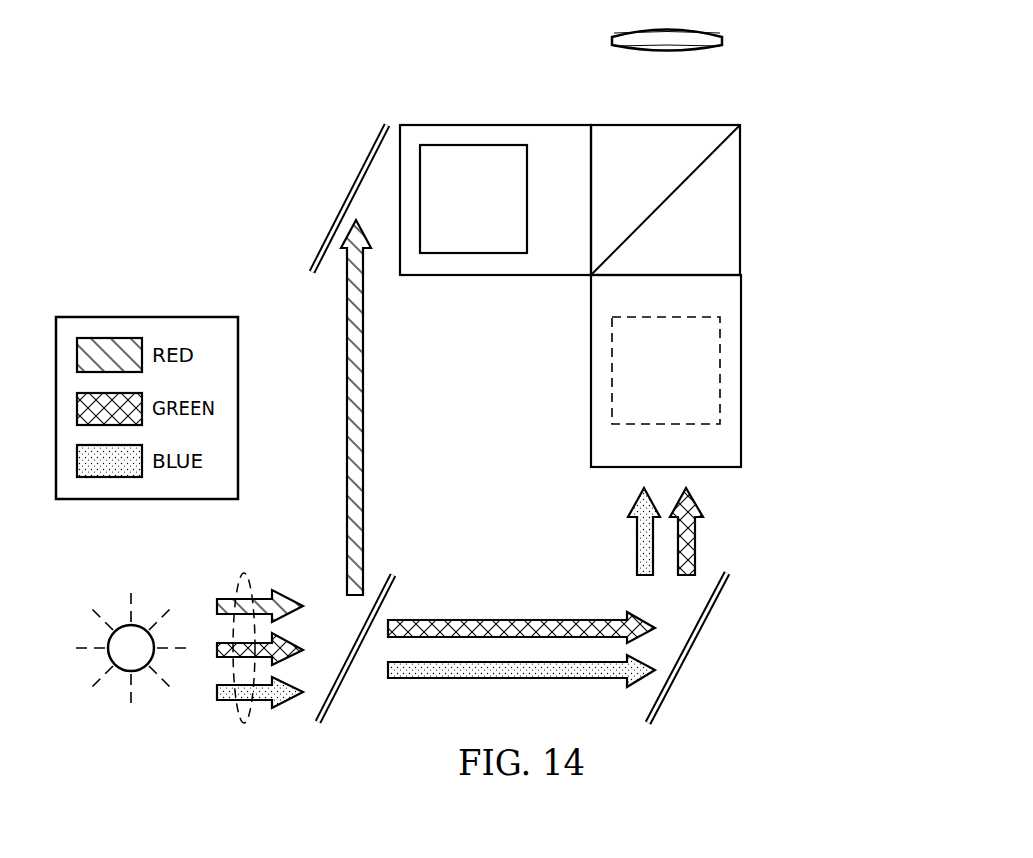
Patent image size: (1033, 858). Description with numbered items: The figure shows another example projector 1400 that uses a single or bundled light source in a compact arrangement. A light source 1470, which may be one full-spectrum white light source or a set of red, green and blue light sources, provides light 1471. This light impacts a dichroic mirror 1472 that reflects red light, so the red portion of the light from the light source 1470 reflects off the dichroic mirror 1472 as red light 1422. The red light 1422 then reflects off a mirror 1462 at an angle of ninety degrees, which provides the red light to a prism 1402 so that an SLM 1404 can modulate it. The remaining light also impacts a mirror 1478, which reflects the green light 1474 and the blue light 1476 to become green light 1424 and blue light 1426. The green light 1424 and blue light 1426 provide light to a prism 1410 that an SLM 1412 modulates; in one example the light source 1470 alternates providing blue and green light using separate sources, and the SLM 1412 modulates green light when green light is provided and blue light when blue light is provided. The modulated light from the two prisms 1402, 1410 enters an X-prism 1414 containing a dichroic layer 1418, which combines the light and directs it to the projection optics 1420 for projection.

The projector 1400 is at (228, 83).
The prism 1402 is at (497, 133).
The SLM 1404 is at (501, 215).
The prism 1410 is at (733, 370).
The SLM 1412 is at (694, 386).
The X-prism 1414 is at (667, 133).
The dichroic layer 1418 is at (727, 142).
The projection optics 1420 is at (724, 40).
The red light 1422 is at (347, 420).
The green light 1424 is at (697, 533).
The blue light 1426 is at (636, 547).
The mirror 1462 is at (345, 195).
The light source 1470 is at (123, 672).
The light 1471 is at (243, 723).
The dichroic mirror 1472 is at (343, 685).
The green light 1474 is at (505, 618).
The blue light 1476 is at (507, 679).
The mirror 1478 is at (688, 650).